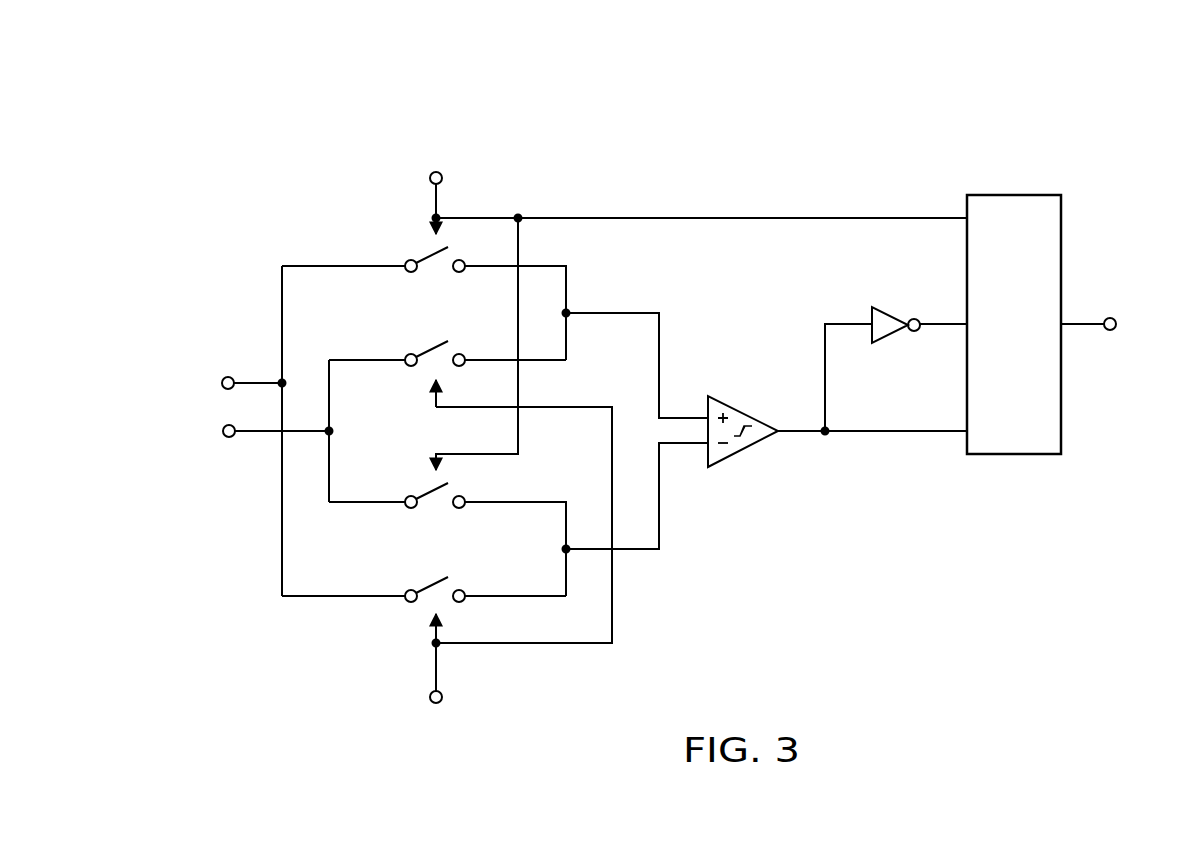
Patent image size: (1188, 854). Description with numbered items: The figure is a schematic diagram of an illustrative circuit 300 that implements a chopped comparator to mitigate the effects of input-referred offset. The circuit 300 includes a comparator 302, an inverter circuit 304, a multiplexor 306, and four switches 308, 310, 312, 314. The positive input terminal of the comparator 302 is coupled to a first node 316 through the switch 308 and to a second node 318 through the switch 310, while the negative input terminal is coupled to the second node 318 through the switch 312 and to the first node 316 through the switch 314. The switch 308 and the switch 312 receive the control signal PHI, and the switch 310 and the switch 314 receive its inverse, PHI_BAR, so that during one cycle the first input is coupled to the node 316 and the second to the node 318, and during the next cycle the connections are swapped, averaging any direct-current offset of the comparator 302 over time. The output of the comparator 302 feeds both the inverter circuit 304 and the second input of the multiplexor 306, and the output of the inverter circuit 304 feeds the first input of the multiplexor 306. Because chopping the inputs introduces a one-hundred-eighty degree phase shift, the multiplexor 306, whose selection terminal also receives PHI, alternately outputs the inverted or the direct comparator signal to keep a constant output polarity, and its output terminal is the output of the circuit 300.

The circuit 300 is at (444, 98).
The comparator 302 is at (742, 452).
The inverter circuit 304 is at (894, 315).
The multiplexor 306 is at (1014, 194).
The switch 308 is at (432, 258).
The switch 310 is at (432, 352).
The switch 312 is at (432, 494).
The switch 314 is at (432, 589).
The first node 316 is at (226, 376).
The second node 318 is at (226, 439).